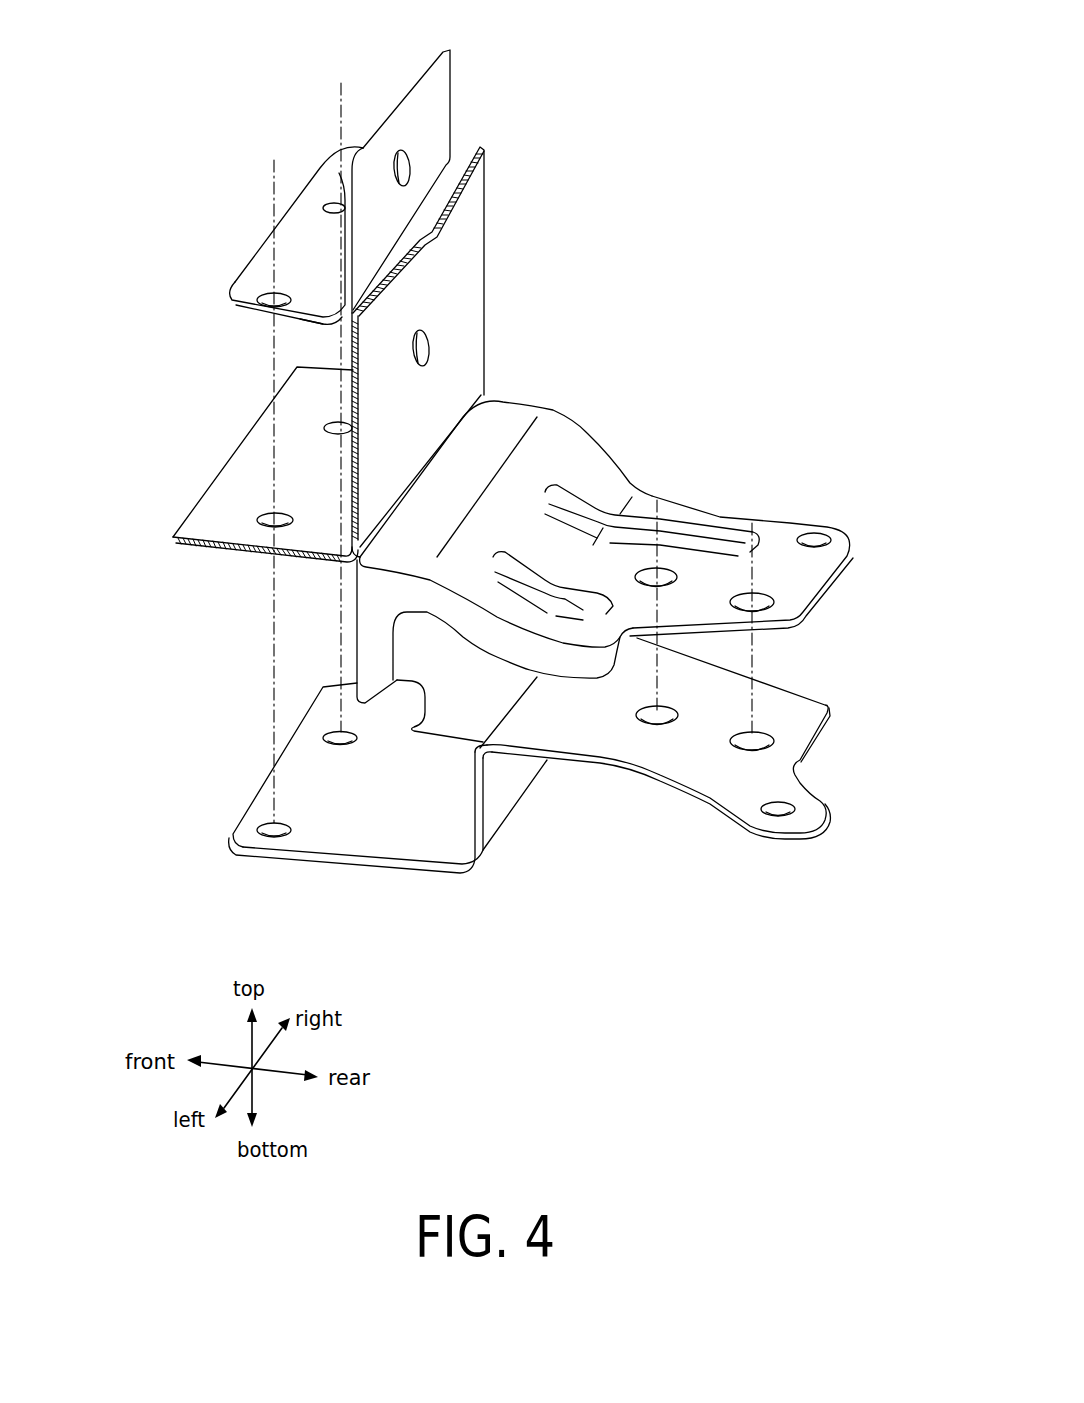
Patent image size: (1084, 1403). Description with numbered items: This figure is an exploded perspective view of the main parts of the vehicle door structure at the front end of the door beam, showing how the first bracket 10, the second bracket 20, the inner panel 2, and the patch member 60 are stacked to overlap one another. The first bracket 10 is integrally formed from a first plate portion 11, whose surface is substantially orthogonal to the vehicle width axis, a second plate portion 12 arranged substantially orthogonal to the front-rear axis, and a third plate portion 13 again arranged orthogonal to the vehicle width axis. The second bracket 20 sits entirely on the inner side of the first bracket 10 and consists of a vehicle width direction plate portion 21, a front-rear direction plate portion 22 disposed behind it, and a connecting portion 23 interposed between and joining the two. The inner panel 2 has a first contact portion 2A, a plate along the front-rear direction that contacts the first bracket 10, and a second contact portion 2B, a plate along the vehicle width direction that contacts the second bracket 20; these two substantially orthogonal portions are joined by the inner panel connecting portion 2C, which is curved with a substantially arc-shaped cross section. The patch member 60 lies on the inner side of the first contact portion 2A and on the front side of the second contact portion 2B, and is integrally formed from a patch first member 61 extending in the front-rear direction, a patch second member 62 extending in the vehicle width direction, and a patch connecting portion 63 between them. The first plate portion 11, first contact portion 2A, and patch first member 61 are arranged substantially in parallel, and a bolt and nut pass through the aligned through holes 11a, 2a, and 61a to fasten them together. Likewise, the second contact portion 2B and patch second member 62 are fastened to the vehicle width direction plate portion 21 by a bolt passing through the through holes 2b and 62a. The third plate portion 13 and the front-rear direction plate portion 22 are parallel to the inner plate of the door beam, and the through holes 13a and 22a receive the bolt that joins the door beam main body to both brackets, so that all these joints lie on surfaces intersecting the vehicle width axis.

The inner panel 2 is at (505, 200).
The first contact portion 2A is at (215, 520).
The second contact portion 2B is at (465, 240).
The inner panel connecting portion 2C is at (366, 556).
The through hole 2a is at (338, 428).
The through hole 2b is at (423, 347).
The first bracket 10 is at (445, 890).
The first plate portion 11 is at (362, 840).
The through hole 11a is at (273, 838).
The second plate portion 12 is at (478, 808).
The third plate portion 13 is at (687, 756).
The through hole 13a is at (655, 722).
The second bracket 20 is at (615, 433).
The vehicle width direction plate portion 21 is at (407, 622).
The front-rear direction plate portion 22 is at (780, 533).
The through hole 22a is at (668, 573).
The connecting portion 23 is at (512, 413).
The patch member 60 is at (228, 267).
The patch first member 61 is at (310, 200).
The through hole 61a is at (330, 207).
The patch second member 62 is at (443, 100).
The through hole 62a is at (408, 164).
The patch connecting portion 63 is at (320, 324).